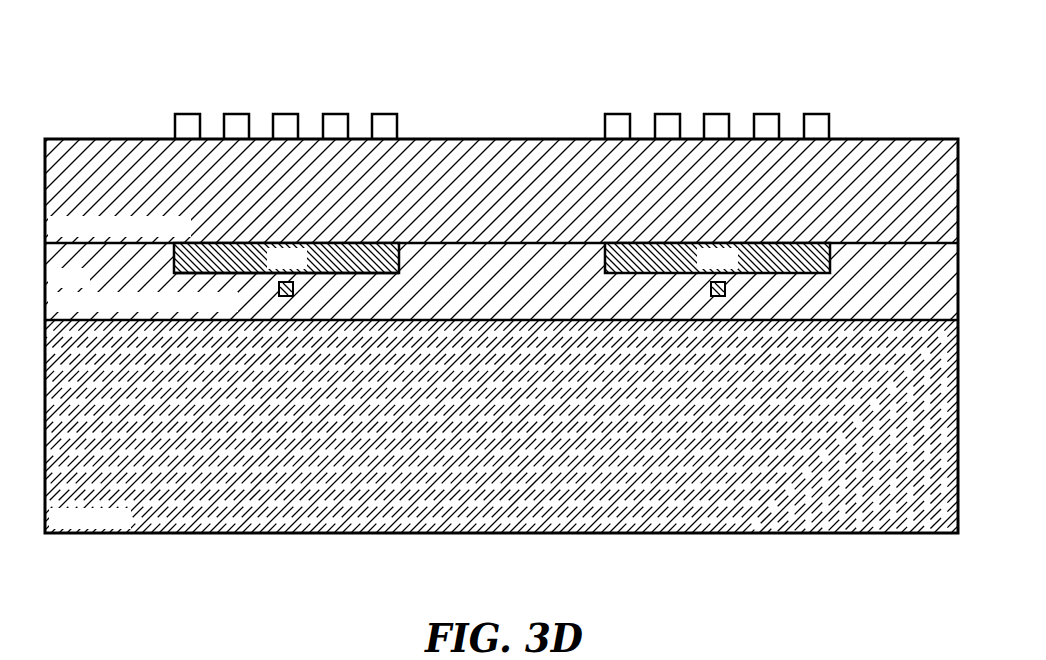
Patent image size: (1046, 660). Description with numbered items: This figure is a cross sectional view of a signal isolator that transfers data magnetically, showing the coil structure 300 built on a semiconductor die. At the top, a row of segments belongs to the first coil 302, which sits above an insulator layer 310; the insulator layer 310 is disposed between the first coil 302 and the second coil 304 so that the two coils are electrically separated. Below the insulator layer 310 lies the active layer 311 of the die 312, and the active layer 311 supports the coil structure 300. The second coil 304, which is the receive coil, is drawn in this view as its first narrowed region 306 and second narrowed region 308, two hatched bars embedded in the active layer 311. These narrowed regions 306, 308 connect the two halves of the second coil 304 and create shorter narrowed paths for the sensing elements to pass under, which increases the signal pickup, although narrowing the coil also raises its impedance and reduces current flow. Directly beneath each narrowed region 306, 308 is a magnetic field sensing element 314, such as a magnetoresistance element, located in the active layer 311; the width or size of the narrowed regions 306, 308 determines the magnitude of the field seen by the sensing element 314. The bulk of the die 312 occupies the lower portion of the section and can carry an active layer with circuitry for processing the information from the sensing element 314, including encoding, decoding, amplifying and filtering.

The structure 300 is at (400, 60).
The first coil 302 is at (255, 93).
The second coil 304 is at (347, 274).
The first narrowed region 306 is at (305, 266).
The second narrowed region 308 is at (735, 266).
The insulator layer 310 is at (188, 235).
The active layer 311 is at (88, 286).
The die 312 is at (127, 526).
The magnetic field sensing element 314 is at (286, 296).